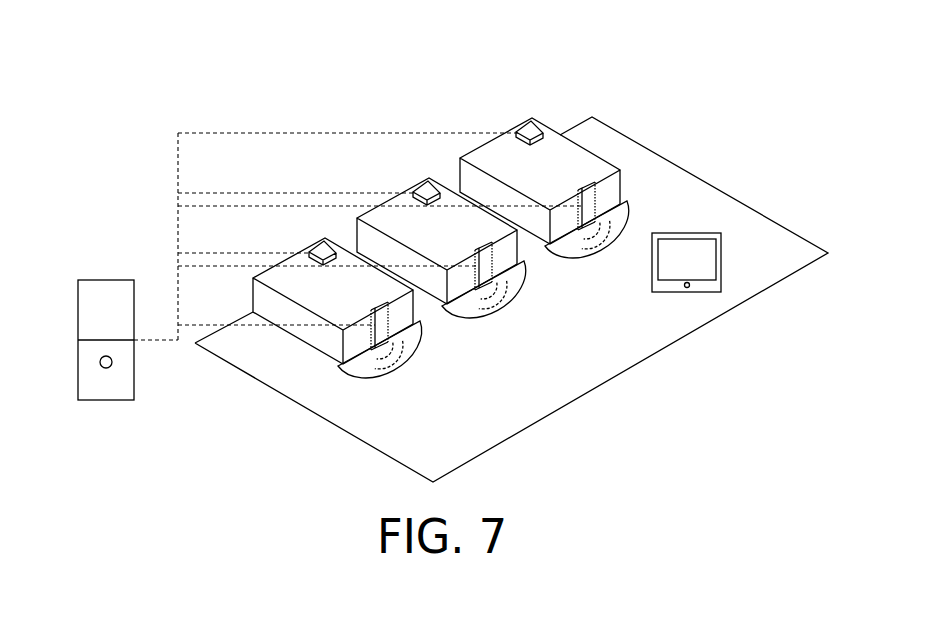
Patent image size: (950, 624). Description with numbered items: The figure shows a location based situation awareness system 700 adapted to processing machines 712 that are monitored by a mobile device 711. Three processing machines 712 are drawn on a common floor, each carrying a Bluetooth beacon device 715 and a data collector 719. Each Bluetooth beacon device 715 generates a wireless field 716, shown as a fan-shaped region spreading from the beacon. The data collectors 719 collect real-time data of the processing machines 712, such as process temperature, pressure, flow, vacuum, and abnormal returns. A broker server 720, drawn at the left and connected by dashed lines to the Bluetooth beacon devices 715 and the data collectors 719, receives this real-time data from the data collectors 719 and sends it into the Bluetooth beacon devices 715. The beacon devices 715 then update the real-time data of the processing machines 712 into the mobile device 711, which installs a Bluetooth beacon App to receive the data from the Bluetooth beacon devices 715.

The location based situation awareness system 700 is at (72, 40).
The mobile device 711 is at (722, 262).
The processing machine 712 is at (358, 311).
The Bluetooth beacon device 715 is at (377, 347).
The wireless field 716 is at (610, 250).
The data collector 719 is at (318, 244).
The broker server 720 is at (105, 402).